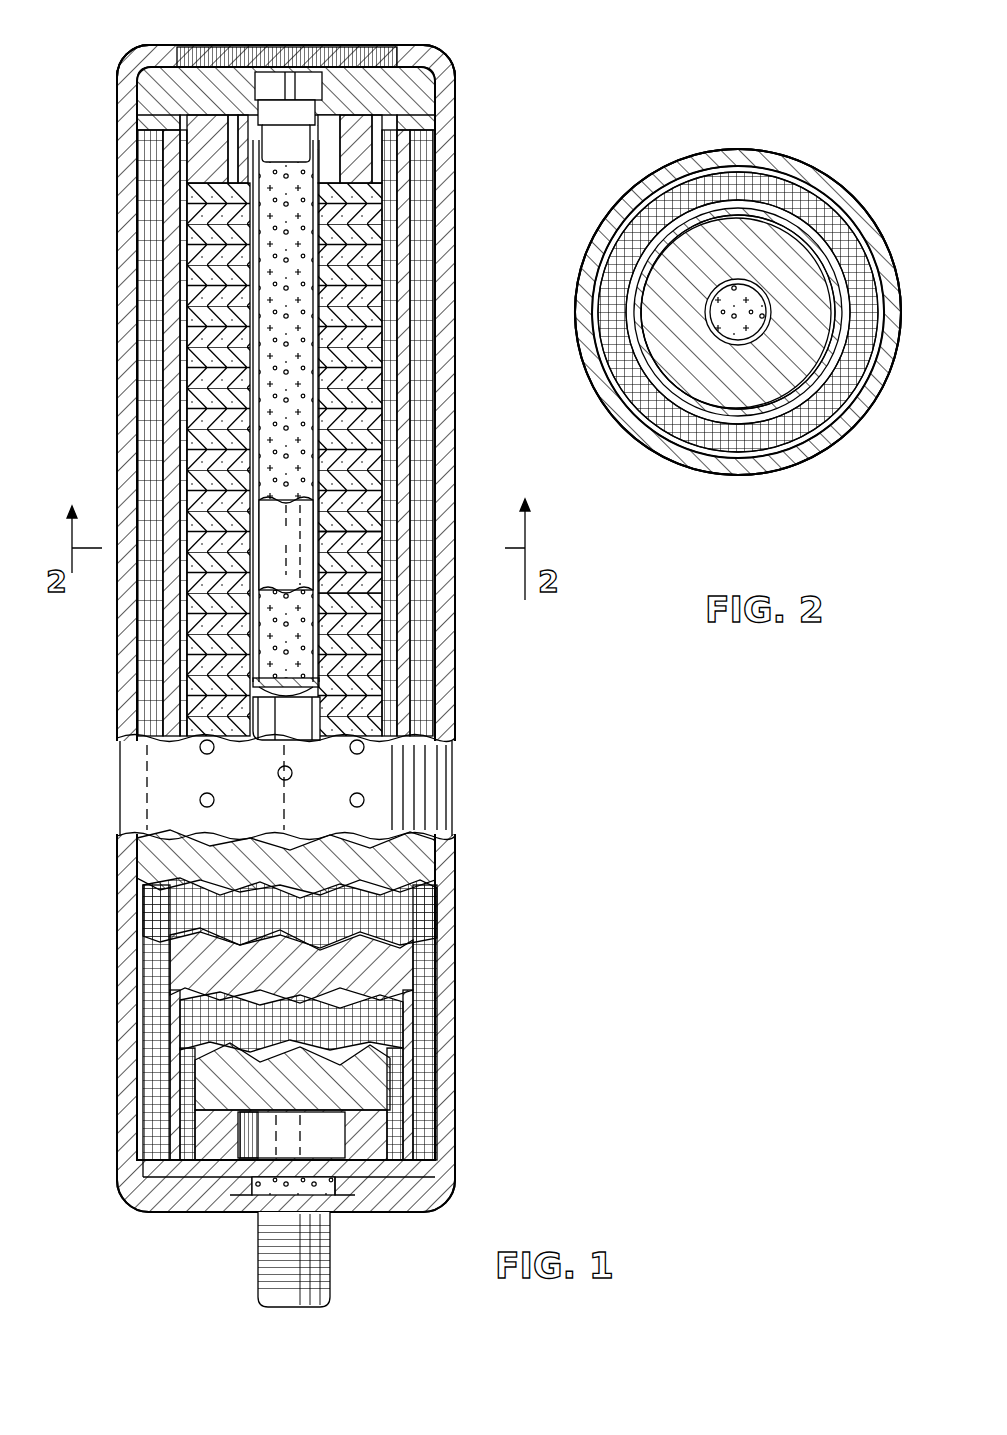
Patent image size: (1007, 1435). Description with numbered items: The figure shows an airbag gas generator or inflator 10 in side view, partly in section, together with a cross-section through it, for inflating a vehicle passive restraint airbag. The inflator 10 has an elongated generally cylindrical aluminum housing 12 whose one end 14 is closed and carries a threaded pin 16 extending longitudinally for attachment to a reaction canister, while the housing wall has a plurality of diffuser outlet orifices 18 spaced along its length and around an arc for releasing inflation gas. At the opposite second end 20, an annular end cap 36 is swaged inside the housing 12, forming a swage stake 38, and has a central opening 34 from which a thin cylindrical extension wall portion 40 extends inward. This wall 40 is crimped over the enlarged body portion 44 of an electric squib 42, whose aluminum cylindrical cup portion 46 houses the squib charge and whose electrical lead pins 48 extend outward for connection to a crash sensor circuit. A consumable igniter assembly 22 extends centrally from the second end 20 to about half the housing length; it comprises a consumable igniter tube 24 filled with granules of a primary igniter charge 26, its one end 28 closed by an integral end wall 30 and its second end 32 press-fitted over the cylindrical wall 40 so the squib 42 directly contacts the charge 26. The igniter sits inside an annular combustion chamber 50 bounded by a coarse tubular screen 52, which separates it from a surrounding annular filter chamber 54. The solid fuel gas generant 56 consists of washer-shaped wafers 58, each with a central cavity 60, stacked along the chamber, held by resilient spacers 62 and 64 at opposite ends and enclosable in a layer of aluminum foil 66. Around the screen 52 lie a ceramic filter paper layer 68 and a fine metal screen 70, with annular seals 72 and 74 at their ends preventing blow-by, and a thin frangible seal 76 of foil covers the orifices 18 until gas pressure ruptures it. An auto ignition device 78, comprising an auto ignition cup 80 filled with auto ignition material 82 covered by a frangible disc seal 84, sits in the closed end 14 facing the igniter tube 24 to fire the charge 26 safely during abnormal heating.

In FIG. 1, the inflator 10 is at (127, 1043).
In FIG. 2, the inflator 10 is at (820, 466).
In FIG. 1, the housing 12 is at (447, 1007).
In FIG. 2, the housing 12 is at (690, 452).
In FIG. 1, the one end of the housing 14 is at (437, 1187).
In FIG. 1, the threaded pin 16 is at (332, 1275).
In FIG. 1, the diffuser outlet orifices 18 is at (365, 798).
In FIG. 1, the second end of the housing 20 is at (437, 54).
In FIG. 1, the consumable igniter assembly 22 is at (325, 153).
In FIG. 1, the igniter tube 24 is at (330, 468).
In FIG. 2, the igniter tube 24 is at (760, 300).
In FIG. 1, the primary igniter charge 26 is at (272, 283).
In FIG. 2, the primary igniter charge 26 is at (680, 283).
In FIG. 1, the one end of the igniter tube 28 is at (330, 690).
In FIG. 1, the end wall 30 is at (295, 703).
In FIG. 1, the second end of the igniter tube 32 is at (172, 140).
In FIG. 1, the central opening 34 is at (287, 105).
In FIG. 1, the annular end cap 36 is at (205, 72).
In FIG. 1, the swage stake 38 is at (150, 50).
In FIG. 1, the cylindrical extension wall portion 40 is at (328, 146).
In FIG. 1, the squib 42 is at (263, 95).
In FIG. 1, the enlarged body portion 44 is at (172, 100).
In FIG. 1, the cylindrical cup portion 46 is at (200, 175).
In FIG. 1, the electrical lead pins 48 is at (289, 72).
In FIG. 1, the annular combustion chamber 50 is at (172, 650).
In FIG. 2, the annular combustion chamber 50 is at (630, 325).
In FIG. 1, the tubular screen 52 is at (200, 1017).
In FIG. 2, the tubular screen 52 is at (863, 422).
In FIG. 1, the annular filter chamber 54 is at (150, 700).
In FIG. 2, the annular filter chamber 54 is at (838, 440).
In FIG. 1, the solid fuel gas generant 56 is at (375, 598).
In FIG. 2, the solid fuel gas generant 56 is at (753, 217).
In FIG. 1, the wafers 58 is at (363, 528).
In FIG. 1, the central cavity 60 is at (300, 717).
In FIG. 2, the central cavity 60 is at (722, 287).
In FIG. 1, the resilient spacer 62 is at (368, 1135).
In FIG. 1, the resilient spacer 64 is at (367, 175).
In FIG. 1, the aluminum foil layer 66 is at (370, 1090).
In FIG. 1, the filter paper layer 68 is at (185, 968).
In FIG. 2, the filter paper layer 68 is at (725, 423).
In FIG. 1, the fine metal screen 70 is at (178, 910).
In FIG. 2, the fine metal screen 70 is at (600, 262).
In FIG. 1, the annular seal 72 is at (135, 1198).
In FIG. 1, the annular seal 74 is at (427, 128).
In FIG. 1, the frangible seal 76 is at (155, 855).
In FIG. 2, the frangible seal 76 is at (623, 367).
In FIG. 1, the auto ignition device 78 is at (247, 1183).
In FIG. 1, the auto ignition cup 80 is at (256, 1183).
In FIG. 1, the auto ignition material 82 is at (340, 1197).
In FIG. 1, the frangible disc seal 84 is at (293, 1178).